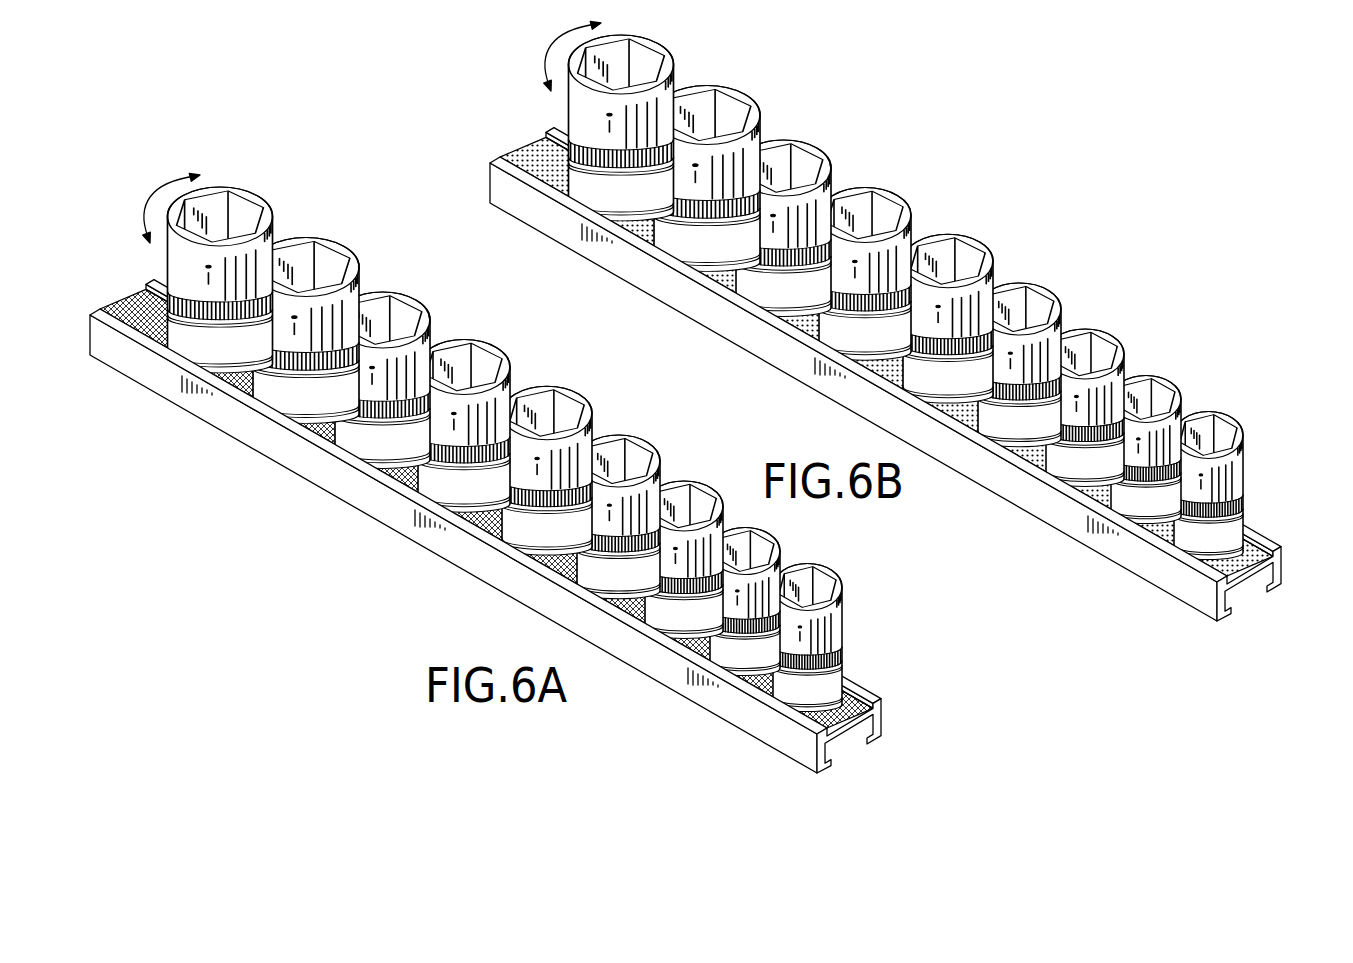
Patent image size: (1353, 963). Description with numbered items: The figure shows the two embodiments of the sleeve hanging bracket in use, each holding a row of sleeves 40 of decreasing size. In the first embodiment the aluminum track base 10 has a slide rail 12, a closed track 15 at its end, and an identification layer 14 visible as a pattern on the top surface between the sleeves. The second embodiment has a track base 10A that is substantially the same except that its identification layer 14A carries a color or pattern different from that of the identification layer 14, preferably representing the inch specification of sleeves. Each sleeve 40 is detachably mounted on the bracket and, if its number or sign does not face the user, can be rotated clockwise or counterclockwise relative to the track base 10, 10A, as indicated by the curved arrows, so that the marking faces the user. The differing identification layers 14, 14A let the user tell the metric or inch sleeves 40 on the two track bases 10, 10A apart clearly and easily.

In FIG. 6A, the track base 10 is at (392, 546).
In FIG. 6B, the track base 10A is at (792, 392).
In FIG. 6A, the slide rail 12 is at (866, 690).
In FIG. 6B, the slide rail 12 is at (1266, 536).
In FIG. 6A, the identification layer 14 is at (833, 721).
In FIG. 6B, the identification layer 14A is at (1233, 569).
In FIG. 6A, the closed track 15 is at (840, 762).
In FIG. 6B, the closed track 15 is at (1240, 608).
In FIG. 6A, the sleeve 40 is at (518, 347).
In FIG. 6B, the sleeve 40 is at (918, 193).